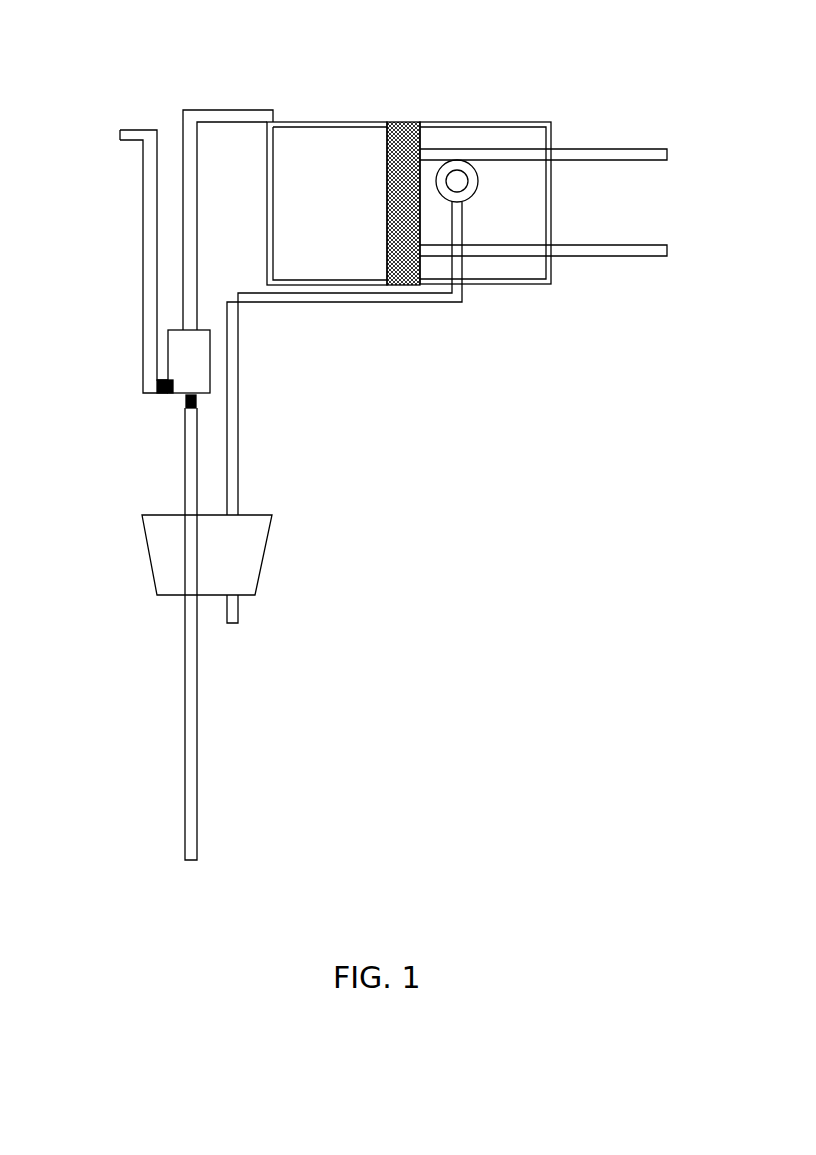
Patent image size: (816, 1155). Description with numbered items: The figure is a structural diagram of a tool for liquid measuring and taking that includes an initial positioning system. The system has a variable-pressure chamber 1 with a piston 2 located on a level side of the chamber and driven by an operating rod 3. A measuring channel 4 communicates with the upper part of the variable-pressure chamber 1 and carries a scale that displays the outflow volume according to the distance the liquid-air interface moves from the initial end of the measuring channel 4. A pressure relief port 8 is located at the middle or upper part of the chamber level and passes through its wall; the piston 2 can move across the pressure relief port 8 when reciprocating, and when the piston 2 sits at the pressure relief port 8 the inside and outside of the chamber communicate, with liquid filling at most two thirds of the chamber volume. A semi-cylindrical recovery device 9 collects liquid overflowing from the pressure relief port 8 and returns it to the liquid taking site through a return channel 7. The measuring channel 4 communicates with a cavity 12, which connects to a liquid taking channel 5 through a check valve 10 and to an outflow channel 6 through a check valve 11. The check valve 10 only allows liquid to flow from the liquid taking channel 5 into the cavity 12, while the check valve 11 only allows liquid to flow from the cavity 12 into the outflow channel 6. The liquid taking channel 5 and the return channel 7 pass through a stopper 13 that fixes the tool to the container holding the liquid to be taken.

The variable-pressure chamber 1 is at (318, 158).
The piston 2 is at (405, 123).
The operating rod 3 is at (643, 158).
The measuring channel 4 is at (195, 108).
The liquid taking channel 5 is at (190, 460).
The outflow channel 6 is at (140, 128).
The return channel 7 is at (313, 305).
The pressure relief port 8 is at (463, 162).
The semi-cylindrical recovery device 9 is at (478, 166).
The check valve 10 is at (184, 398).
The check valve 11 is at (178, 395).
The cavity 12 is at (197, 367).
The stopper 13 is at (252, 545).